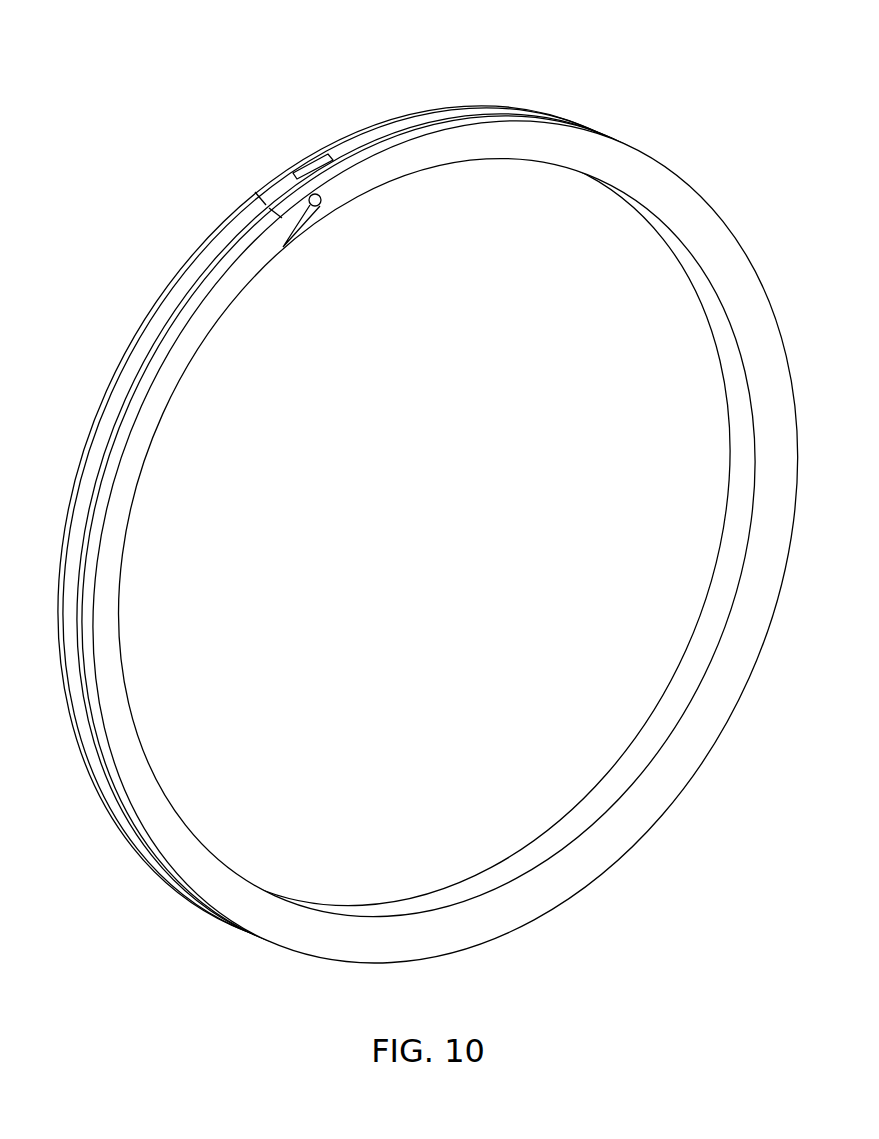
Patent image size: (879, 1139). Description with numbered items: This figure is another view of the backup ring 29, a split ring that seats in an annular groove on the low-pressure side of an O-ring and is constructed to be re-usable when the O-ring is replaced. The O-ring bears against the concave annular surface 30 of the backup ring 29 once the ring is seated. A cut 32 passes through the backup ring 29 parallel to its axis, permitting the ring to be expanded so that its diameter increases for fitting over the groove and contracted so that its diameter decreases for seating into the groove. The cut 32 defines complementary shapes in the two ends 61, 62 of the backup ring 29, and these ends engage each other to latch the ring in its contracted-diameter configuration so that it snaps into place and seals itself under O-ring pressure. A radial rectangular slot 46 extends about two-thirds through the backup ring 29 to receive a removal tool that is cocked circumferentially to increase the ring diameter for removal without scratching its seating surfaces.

The backup ring 29 is at (439, 538).
The concave annular surface 30 is at (375, 174).
The cut 32 is at (285, 216).
The radial rectangular slot 46 is at (312, 155).
The first end 61 is at (439, 535).
The second end 62 is at (439, 531).